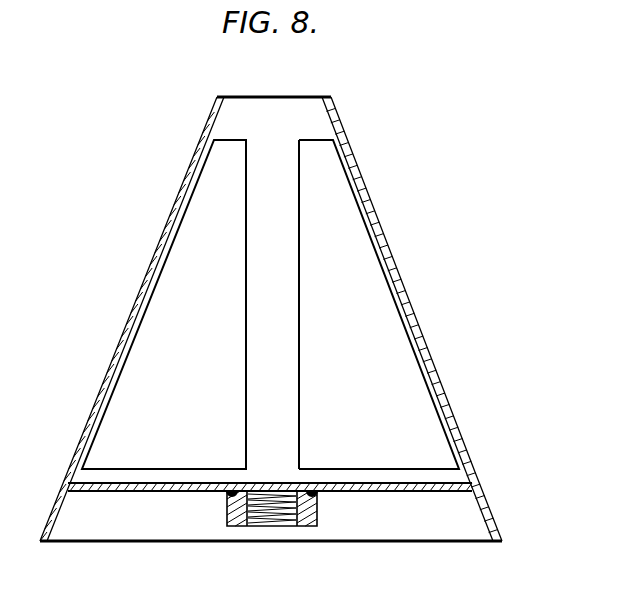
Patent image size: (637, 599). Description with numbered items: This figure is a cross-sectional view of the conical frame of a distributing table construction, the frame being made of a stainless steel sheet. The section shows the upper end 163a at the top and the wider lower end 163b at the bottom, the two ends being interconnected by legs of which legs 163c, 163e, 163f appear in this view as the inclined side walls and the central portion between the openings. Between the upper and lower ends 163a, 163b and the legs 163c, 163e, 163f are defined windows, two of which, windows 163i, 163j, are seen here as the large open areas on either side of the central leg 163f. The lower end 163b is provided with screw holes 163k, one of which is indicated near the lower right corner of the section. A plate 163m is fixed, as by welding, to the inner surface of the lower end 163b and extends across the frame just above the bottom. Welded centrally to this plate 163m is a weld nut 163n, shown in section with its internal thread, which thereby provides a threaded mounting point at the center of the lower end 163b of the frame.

The upper end 163a is at (287, 113).
The lower end 163b is at (457, 528).
The leg 163c is at (167, 237).
The leg 163e is at (368, 197).
The leg 163f is at (288, 172).
The window 163i is at (378, 355).
The window 163j is at (147, 370).
The screw hole 163k is at (497, 518).
The plate 163m is at (380, 493).
The weld nut 163n is at (228, 527).